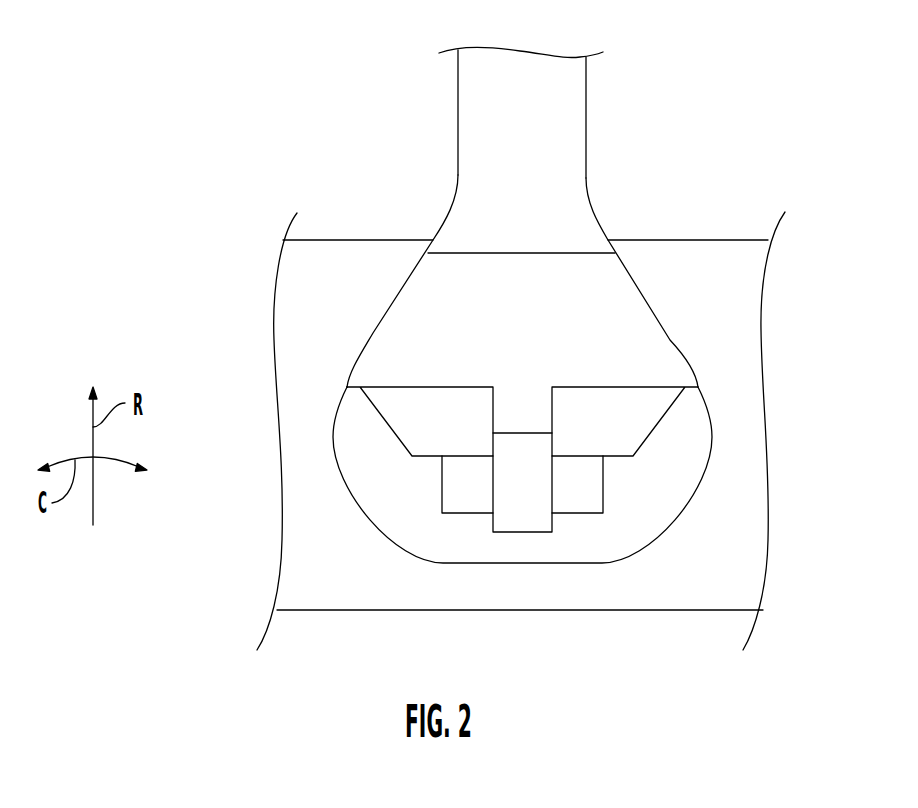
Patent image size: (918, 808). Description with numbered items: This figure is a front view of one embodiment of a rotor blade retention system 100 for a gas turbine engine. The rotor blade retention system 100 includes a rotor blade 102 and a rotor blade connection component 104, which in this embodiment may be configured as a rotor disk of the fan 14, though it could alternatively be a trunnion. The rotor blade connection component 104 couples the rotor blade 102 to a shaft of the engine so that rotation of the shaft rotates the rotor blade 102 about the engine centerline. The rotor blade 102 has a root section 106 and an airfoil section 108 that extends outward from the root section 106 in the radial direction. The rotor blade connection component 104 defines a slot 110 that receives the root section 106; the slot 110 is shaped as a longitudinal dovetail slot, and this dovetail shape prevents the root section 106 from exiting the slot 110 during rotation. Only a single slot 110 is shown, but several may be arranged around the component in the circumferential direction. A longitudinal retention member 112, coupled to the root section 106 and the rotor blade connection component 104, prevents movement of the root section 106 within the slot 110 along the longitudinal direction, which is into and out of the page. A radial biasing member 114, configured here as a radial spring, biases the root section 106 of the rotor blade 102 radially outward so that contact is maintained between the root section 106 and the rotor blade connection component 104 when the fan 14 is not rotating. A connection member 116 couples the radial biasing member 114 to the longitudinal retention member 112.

The rotor blade retention system 100 is at (228, 36).
The fan 14 is at (672, 94).
The rotor blade 102 is at (420, 183).
The rotor blade connection component 104 is at (735, 240).
The root section 106 is at (403, 417).
The airfoil section 108 is at (458, 107).
The slot 110 is at (380, 483).
The longitudinal retention member 112 is at (410, 337).
The radial biasing member 114 is at (579, 513).
The connection member 116 is at (513, 513).